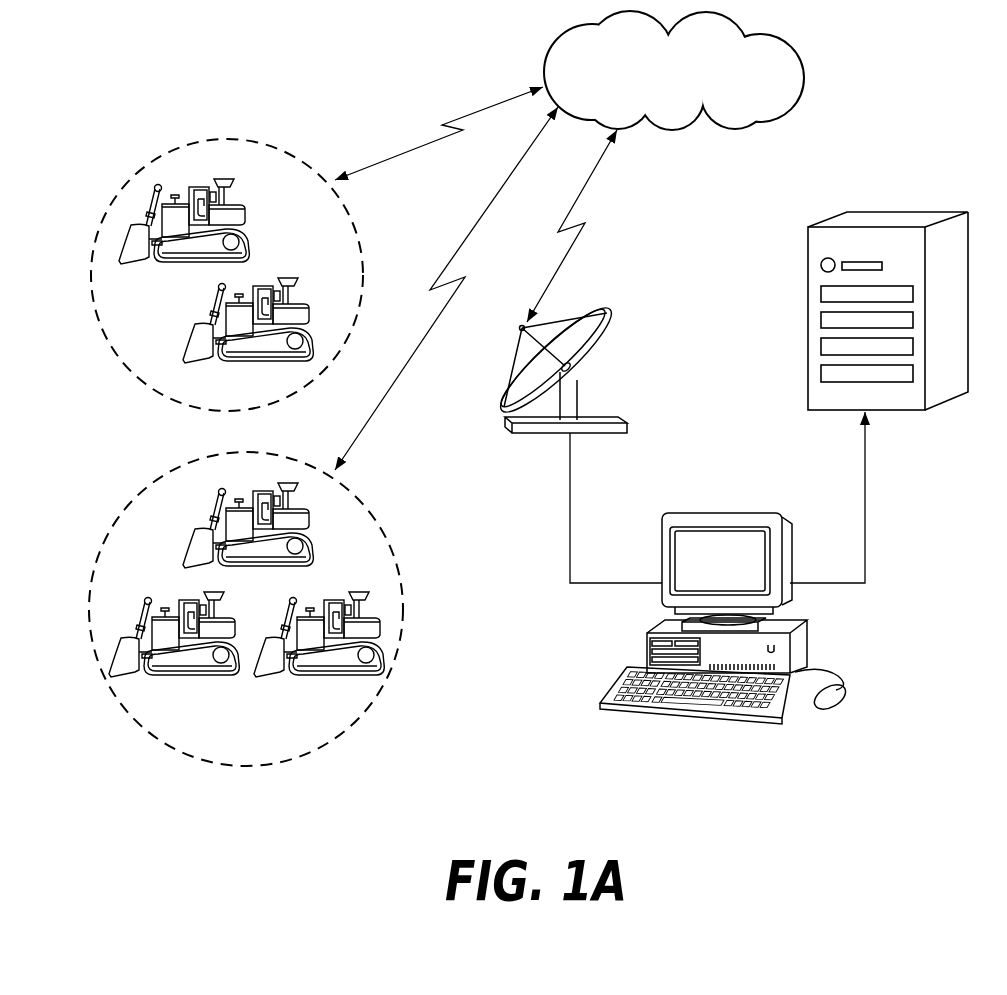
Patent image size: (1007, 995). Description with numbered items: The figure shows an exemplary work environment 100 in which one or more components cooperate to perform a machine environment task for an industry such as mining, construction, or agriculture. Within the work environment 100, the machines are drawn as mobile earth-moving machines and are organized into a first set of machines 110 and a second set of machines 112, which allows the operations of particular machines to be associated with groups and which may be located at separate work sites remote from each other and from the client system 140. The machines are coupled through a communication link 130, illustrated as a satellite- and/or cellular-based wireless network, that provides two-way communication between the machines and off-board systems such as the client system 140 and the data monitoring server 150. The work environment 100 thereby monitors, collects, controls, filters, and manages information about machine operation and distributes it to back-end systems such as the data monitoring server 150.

The work environment 100 is at (162, 85).
The first set of machines 110 is at (91, 258).
The second set of machines 112 is at (366, 506).
The communication link 130 is at (803, 68).
The client system 140 is at (713, 513).
The data monitoring server 150 is at (808, 300).